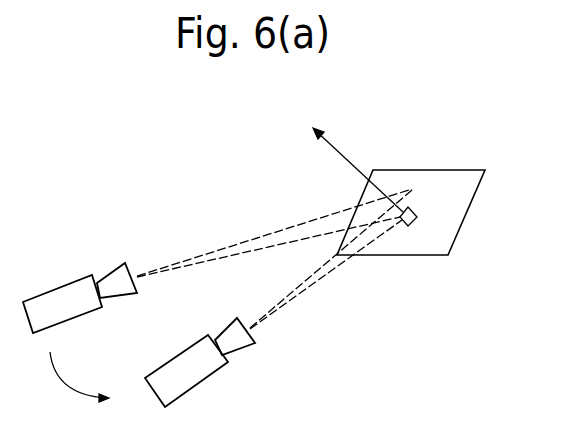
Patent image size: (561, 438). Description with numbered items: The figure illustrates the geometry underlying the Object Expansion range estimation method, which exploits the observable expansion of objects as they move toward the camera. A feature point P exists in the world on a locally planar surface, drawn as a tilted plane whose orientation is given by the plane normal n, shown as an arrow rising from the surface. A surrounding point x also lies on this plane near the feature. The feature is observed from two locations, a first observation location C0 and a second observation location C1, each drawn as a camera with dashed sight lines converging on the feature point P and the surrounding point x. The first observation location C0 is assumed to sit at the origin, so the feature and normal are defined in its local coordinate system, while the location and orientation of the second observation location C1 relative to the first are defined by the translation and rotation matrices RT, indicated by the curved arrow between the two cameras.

The first observation location C0 is at (80, 293).
The second observation location C1 is at (200, 369).
The feature point P is at (418, 218).
The surrounding point x is at (422, 184).
The plane normal n is at (358, 158).
The rotation and translation matrices RT is at (66, 385).